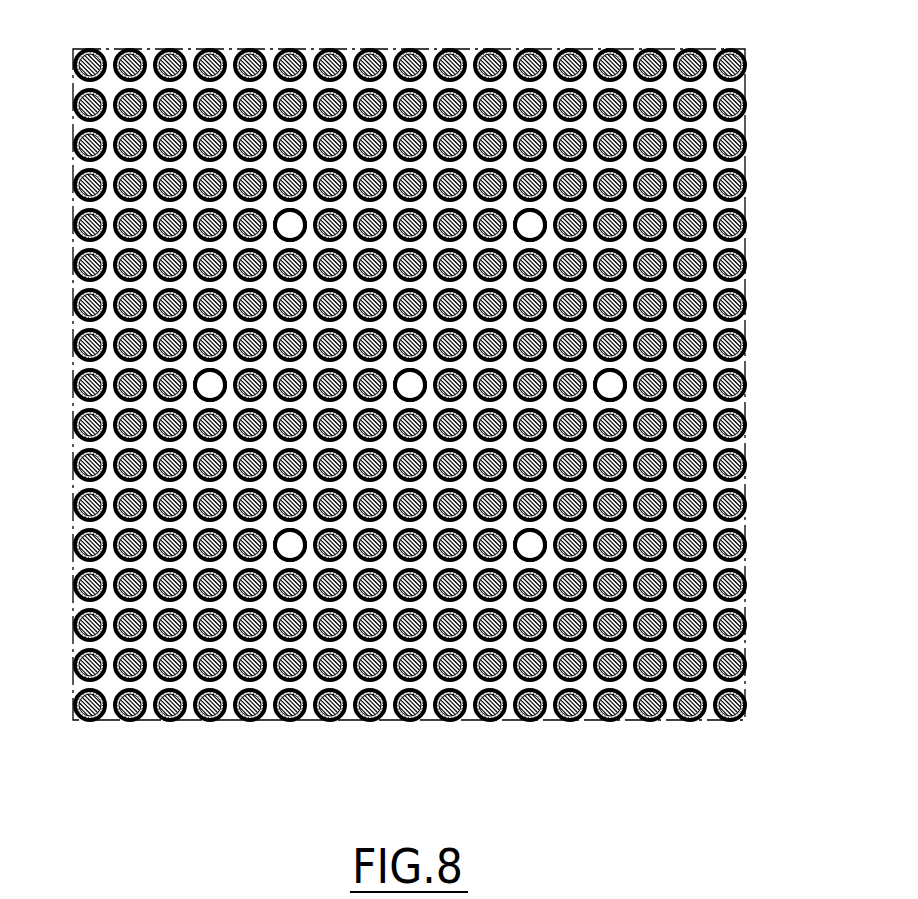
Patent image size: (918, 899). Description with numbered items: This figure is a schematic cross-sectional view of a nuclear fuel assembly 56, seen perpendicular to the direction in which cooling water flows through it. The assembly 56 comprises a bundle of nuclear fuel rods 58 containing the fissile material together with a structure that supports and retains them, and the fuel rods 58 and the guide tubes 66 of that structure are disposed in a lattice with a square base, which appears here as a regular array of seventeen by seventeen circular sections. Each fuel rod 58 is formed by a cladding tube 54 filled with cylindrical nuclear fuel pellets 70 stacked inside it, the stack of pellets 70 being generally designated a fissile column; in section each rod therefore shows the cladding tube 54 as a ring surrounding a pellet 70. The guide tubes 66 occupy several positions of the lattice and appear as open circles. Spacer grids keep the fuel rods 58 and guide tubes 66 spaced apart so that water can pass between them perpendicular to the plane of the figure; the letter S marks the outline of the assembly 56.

The cladding tube 54 is at (344, 52).
The assembly 56 is at (405, 417).
The fuel rod 58 is at (745, 545).
The guide tube 66 is at (528, 226).
The nuclear fuel pellet 70 is at (326, 50).
The substrate S is at (745, 49).